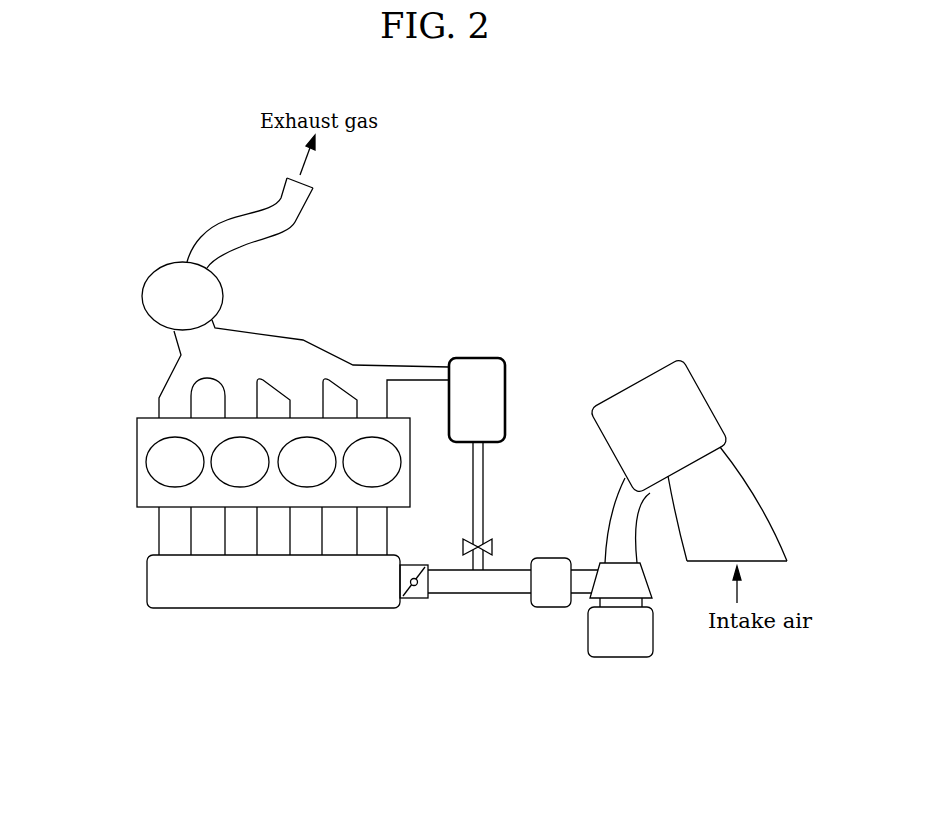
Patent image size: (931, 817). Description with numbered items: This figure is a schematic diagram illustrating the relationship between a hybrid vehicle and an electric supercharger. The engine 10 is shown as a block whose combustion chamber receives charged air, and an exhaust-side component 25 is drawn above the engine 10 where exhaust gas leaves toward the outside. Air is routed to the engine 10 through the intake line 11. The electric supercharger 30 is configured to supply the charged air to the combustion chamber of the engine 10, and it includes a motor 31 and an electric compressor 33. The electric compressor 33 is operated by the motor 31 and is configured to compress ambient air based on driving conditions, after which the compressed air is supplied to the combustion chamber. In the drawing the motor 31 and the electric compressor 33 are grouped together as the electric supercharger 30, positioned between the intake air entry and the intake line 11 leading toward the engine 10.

The engine 10 is at (120, 475).
The intake line 11 is at (614, 503).
The turbocharger 25 is at (150, 273).
The electric supercharger 30 is at (664, 657).
The motor 31 is at (643, 659).
The electric compressor 33 is at (662, 589).